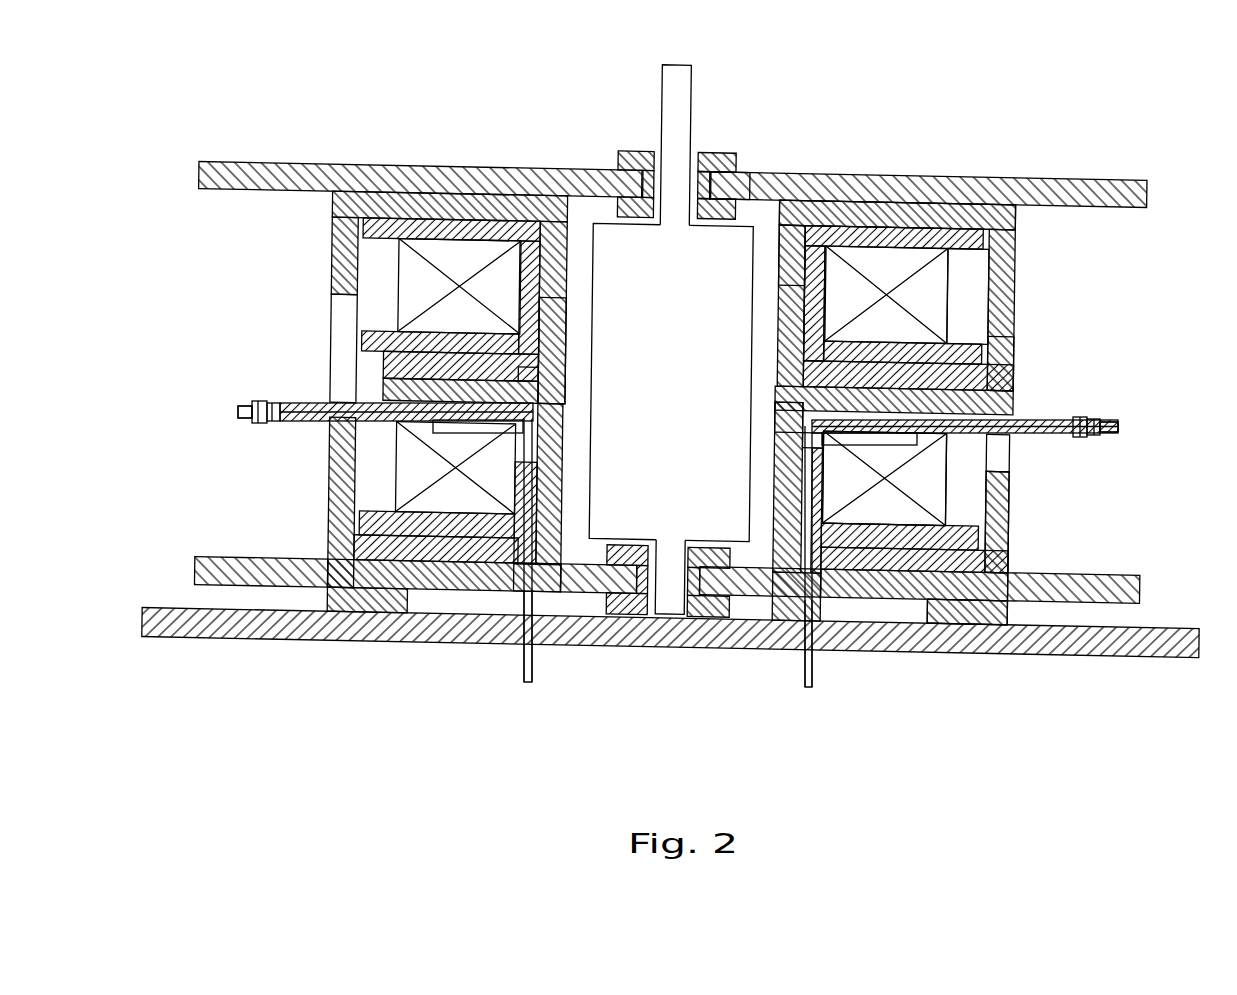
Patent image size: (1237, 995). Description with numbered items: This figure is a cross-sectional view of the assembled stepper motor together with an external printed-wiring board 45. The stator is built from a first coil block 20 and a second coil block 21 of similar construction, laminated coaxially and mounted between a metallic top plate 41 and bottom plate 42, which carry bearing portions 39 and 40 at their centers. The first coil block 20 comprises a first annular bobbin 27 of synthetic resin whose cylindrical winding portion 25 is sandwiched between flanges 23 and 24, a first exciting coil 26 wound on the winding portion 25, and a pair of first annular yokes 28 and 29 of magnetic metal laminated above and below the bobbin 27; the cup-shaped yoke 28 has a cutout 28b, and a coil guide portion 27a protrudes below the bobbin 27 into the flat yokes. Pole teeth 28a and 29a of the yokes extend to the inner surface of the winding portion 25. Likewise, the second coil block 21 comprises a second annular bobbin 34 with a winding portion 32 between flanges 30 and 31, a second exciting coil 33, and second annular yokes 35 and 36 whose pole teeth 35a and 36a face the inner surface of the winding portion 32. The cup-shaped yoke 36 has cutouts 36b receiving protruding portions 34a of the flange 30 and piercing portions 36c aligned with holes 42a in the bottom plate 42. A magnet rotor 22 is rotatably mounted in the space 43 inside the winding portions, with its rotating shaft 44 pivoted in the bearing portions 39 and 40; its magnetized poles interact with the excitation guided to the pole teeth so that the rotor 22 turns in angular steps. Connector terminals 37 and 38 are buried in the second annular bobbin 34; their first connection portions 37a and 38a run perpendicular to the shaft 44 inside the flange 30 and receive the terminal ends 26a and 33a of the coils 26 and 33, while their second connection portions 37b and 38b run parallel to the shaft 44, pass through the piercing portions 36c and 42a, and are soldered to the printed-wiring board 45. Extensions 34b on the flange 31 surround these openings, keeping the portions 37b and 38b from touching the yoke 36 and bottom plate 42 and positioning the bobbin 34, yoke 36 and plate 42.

The first coil block 20 is at (1150, 279).
The second coil block 21 is at (1157, 518).
The magnet rotor 22 is at (761, 212).
The flange 23 is at (417, 226).
The flange 24 is at (939, 347).
The winding portion 25 is at (812, 310).
The first exciting coil 26 is at (407, 263).
The terminal end 26a is at (255, 405).
The first annular bobbin 27 is at (965, 290).
The coil guide portion 27a is at (370, 360).
The first annular yoke 28 is at (462, 201).
The pole teeth 28a is at (790, 240).
The cutout 28b is at (342, 317).
The first annular yoke 29 is at (1007, 370).
The pole teeth 29a is at (562, 323).
The flange 30 is at (545, 384).
The flange 31 is at (437, 535).
The winding portion 32 is at (562, 468).
The second exciting coil 33 is at (410, 467).
The terminal end 33a is at (1100, 426).
The second annular bobbin 34 is at (960, 506).
The protruding portions 34a is at (303, 403).
The extensions 34b is at (518, 590).
The second annular yoke 35 is at (1000, 407).
The pole teeth 35a is at (790, 410).
The second annular yoke 36 is at (333, 518).
The pole teeth 36a is at (553, 525).
The cutouts 36b is at (1000, 450).
The piercing portions 36c is at (548, 575).
The connector terminal 37 is at (223, 418).
The first connection portion 37a is at (445, 427).
The second connection portion 37b is at (525, 682).
The connector terminal 38 is at (1150, 430).
The first connection portion 38a is at (905, 440).
The second connection portion 38b is at (782, 595).
The bearing portion 39 is at (726, 157).
The bearing portion 40 is at (715, 612).
The top plate 41 is at (892, 176).
The bottom plate 42 is at (1132, 596).
The holes 42a is at (535, 567).
The space 43 is at (580, 238).
The rotating shaft 44 is at (686, 96).
The printed-wiring board 45 is at (1095, 648).